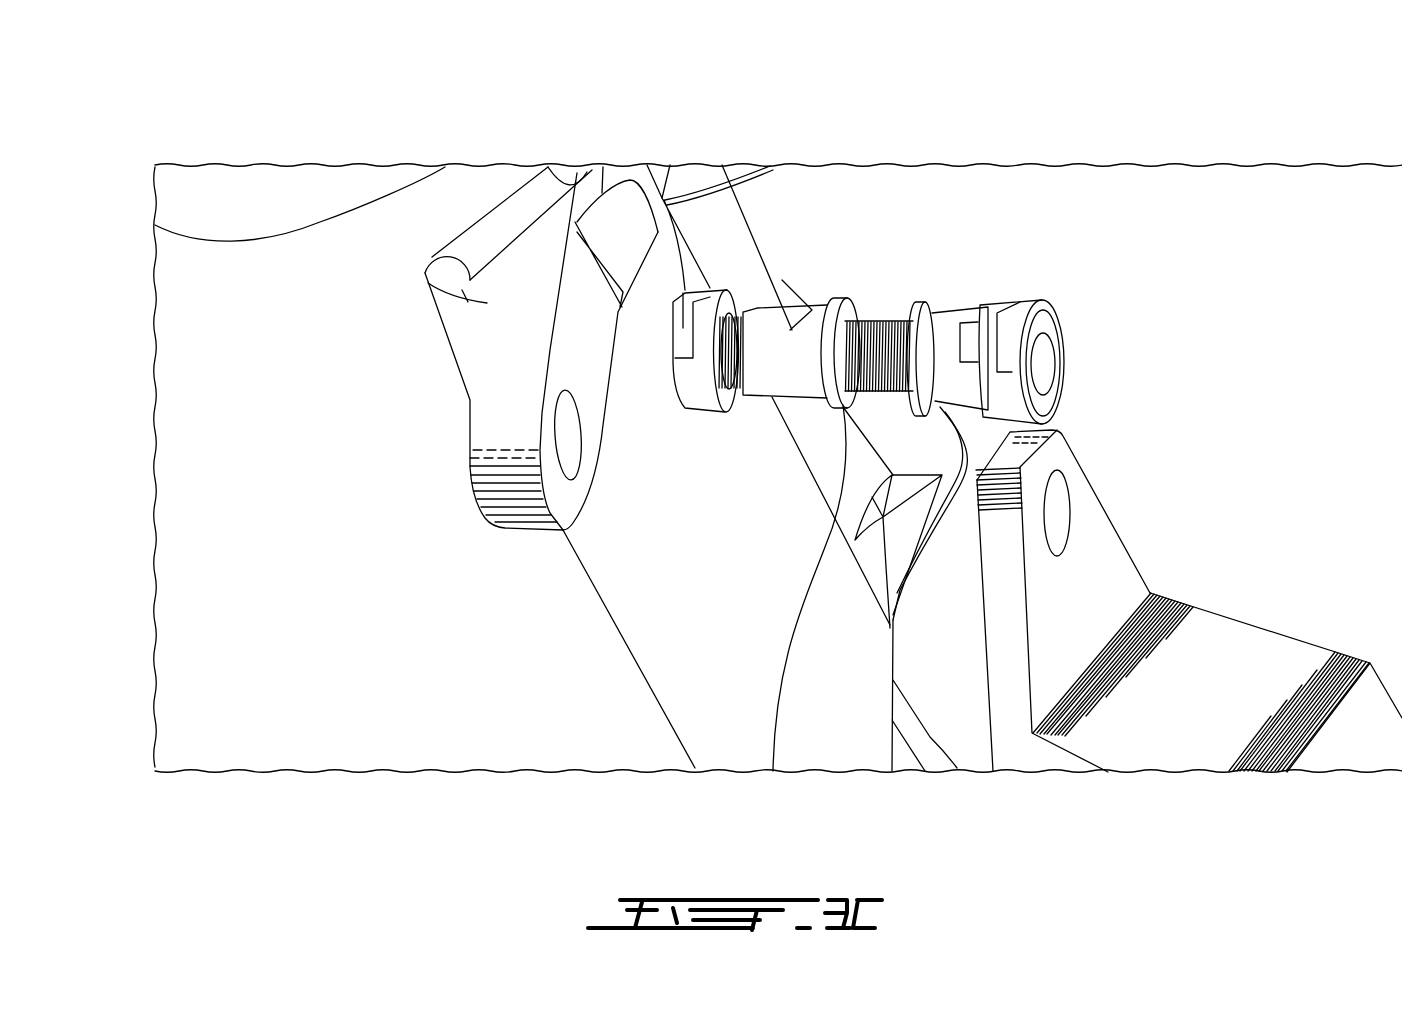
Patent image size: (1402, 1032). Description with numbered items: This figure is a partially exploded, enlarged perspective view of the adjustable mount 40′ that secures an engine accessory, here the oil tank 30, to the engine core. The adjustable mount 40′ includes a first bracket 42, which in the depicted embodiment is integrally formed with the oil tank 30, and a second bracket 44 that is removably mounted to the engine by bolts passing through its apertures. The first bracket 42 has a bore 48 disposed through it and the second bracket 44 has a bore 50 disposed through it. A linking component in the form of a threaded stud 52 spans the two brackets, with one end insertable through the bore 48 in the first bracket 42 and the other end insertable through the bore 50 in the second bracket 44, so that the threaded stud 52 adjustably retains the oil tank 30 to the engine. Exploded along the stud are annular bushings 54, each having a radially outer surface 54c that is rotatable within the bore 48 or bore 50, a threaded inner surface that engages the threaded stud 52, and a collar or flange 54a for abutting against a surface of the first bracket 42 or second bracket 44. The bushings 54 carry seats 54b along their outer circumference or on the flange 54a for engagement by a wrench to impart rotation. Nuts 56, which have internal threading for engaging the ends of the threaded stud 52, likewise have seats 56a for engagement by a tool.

The oil tank 30 is at (176, 129).
The adjustable mount 40′ is at (913, 628).
The first bracket 42 is at (526, 313).
The second bracket 44 is at (1200, 647).
The bore 48 is at (568, 435).
The bore 50 is at (1057, 513).
The threaded stud 52 is at (883, 322).
The bushings 54 is at (782, 280).
The flange 54a is at (772, 771).
The seats 54b is at (770, 280).
The radially outer surface 54c is at (978, 390).
The nuts 56 is at (717, 290).
The seats 56a is at (662, 198).